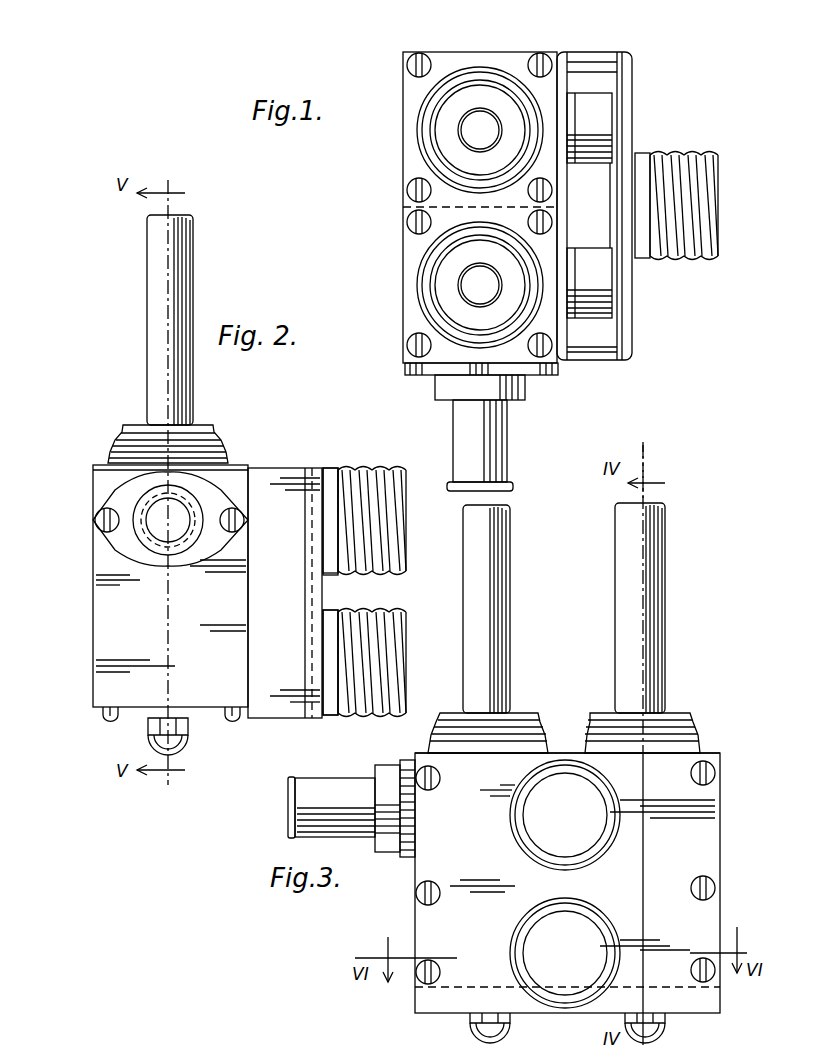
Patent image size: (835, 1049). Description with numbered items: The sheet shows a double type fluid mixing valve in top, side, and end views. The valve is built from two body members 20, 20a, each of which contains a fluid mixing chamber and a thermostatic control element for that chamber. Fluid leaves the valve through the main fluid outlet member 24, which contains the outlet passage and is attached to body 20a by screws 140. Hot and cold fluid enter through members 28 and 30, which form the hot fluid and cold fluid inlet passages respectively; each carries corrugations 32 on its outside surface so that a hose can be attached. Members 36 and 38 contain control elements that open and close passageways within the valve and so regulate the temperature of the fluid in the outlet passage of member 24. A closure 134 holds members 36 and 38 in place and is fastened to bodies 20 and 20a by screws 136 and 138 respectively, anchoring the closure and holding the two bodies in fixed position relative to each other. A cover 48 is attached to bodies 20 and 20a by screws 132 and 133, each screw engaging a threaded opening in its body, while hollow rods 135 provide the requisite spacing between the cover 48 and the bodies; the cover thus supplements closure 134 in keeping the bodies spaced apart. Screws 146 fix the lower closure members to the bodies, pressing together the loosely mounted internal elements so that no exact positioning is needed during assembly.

In FIG. 1, the body member 20 is at (410, 84).
In FIG. 2, the body member 20 is at (170, 586).
In FIG. 3, the body member 20 is at (705, 856).
In FIG. 1, the body member 20a is at (415, 251).
In FIG. 2, the body member 20a is at (105, 612).
In FIG. 3, the body member 20a is at (432, 921).
In FIG. 1, the main fluid outlet member 24 is at (497, 439).
In FIG. 2, the main fluid outlet member 24 is at (135, 508).
In FIG. 3, the main fluid outlet member 24 is at (310, 793).
In FIG. 2, the hot fluid inlet member 28 is at (402, 642).
In FIG. 3, the hot fluid inlet member 28 is at (572, 996).
In FIG. 2, the cold fluid inlet member 30 is at (402, 555).
In FIG. 3, the cold fluid inlet member 30 is at (566, 780).
In FIG. 1, the corrugations 32 is at (680, 160).
In FIG. 2, the corrugations 32 is at (360, 468).
In FIG. 1, the control member 36 is at (470, 290).
In FIG. 2, the control member 36 is at (192, 282).
In FIG. 3, the control member 36 is at (510, 616).
In FIG. 1, the control member 38 is at (464, 130).
In FIG. 3, the control member 38 is at (662, 596).
In FIG. 2, the cover 48 is at (280, 718).
In FIG. 3, the cover 48 is at (693, 749).
In FIG. 3, the screws 132 is at (716, 774).
In FIG. 3, the screws 133 is at (420, 767).
In FIG. 1, the closure 134 is at (410, 158).
In FIG. 2, the closure 134 is at (212, 432).
In FIG. 3, the closure 134 is at (531, 712).
In FIG. 1, the hollow rods 135 is at (604, 62).
In FIG. 1, the screws 136 is at (419, 55).
In FIG. 1, the screws 138 is at (409, 346).
In FIG. 2, the screws 140 is at (96, 520).
In FIG. 2, the screws 146 is at (104, 720).